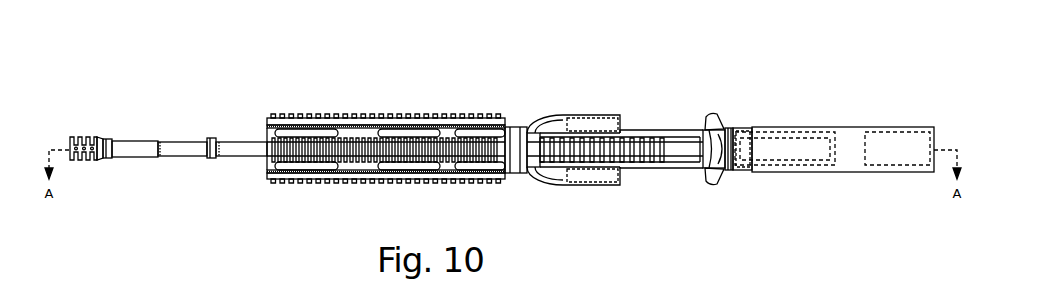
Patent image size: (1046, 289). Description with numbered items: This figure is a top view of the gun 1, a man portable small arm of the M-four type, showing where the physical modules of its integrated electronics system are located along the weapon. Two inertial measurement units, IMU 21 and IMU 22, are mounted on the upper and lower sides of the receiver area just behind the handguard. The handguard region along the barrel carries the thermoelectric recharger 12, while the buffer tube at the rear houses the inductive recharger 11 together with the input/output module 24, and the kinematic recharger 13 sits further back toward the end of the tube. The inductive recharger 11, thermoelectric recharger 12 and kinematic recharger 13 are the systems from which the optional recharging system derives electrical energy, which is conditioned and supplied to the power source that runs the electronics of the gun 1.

The gun 1 is at (183, 63).
The thermoelectric recharger 12 is at (386, 118).
The IMU 22 is at (591, 89).
The IMU 21 is at (590, 214).
The inductive recharger 11 is at (757, 111).
The input/output (I/O) module 24 is at (760, 175).
The kinematic recharger 13 is at (890, 111).